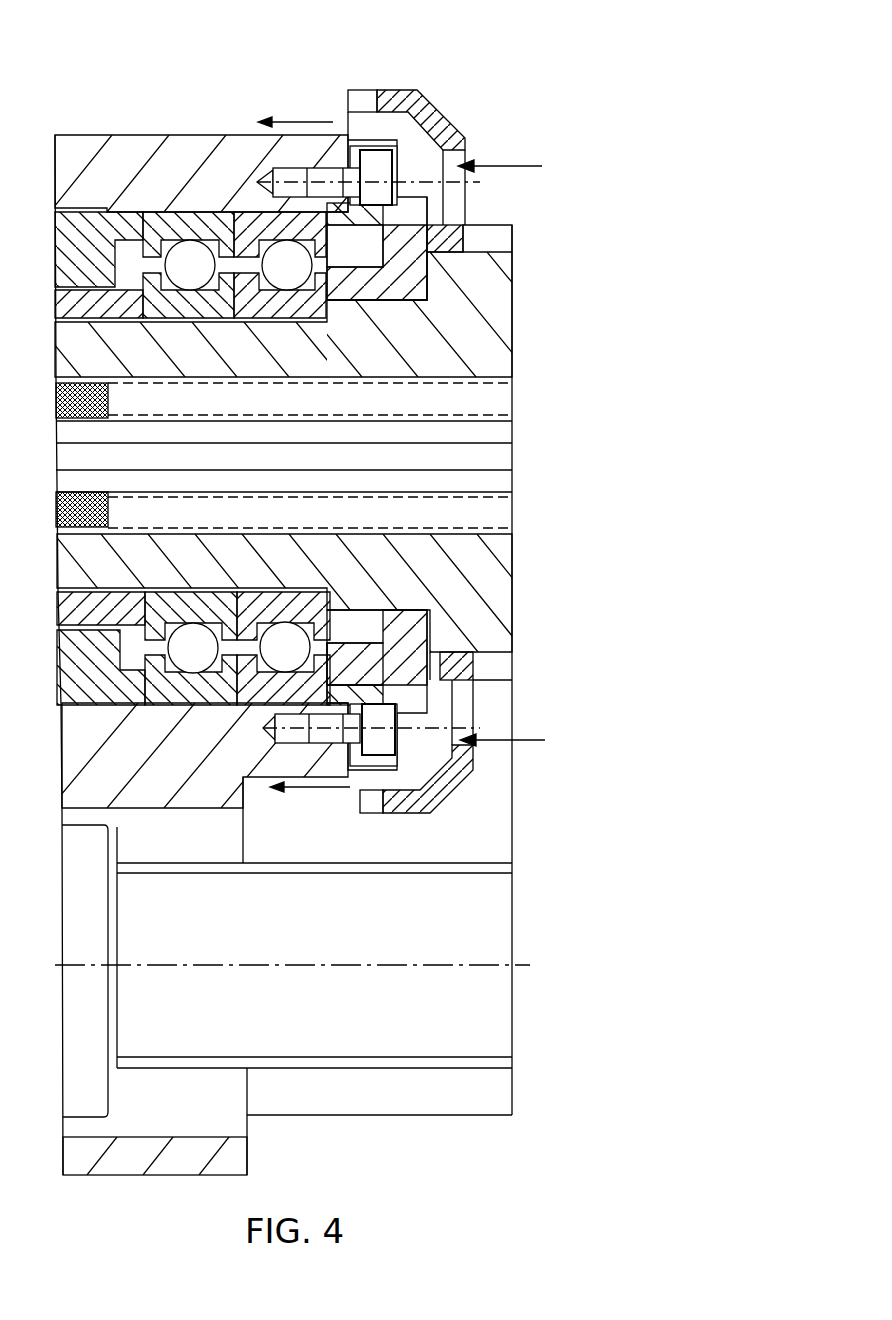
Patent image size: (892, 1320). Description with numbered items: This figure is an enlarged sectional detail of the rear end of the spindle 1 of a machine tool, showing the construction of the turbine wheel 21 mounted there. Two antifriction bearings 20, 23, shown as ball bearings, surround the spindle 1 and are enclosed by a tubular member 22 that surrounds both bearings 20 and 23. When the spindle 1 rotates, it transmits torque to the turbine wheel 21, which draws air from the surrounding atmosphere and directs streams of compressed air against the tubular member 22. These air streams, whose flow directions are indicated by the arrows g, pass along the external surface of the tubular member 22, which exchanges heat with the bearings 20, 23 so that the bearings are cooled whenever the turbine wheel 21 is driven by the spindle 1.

The spindle 1 is at (493, 353).
The antifriction bearing 20 is at (185, 255).
The turbine wheel 21 is at (448, 103).
The tubular member 22 is at (125, 160).
The antifriction bearing 23 is at (278, 272).
The arrows indicating air stream directions g is at (503, 166).